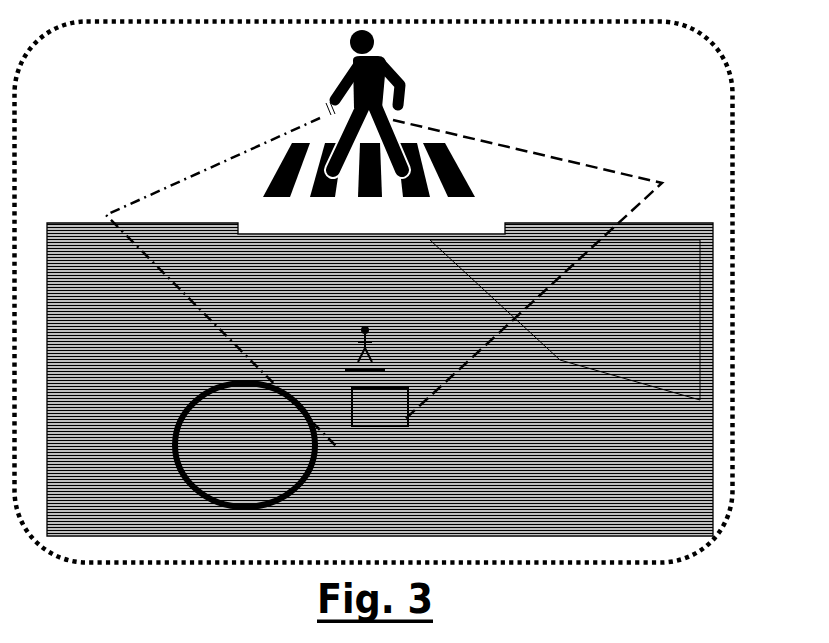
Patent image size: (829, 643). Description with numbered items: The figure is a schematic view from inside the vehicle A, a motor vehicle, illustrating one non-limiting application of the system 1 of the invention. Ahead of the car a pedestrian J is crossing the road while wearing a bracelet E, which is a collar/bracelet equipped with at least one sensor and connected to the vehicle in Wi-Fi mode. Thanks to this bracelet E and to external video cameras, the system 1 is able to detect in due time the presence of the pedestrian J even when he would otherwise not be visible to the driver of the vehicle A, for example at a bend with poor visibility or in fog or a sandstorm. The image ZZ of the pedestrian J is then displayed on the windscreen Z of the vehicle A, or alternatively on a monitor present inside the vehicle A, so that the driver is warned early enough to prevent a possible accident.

The system 1 is at (702, 554).
The vehicle A is at (74, 512).
The windscreen Z is at (548, 342).
The image of the pedestrian ZZ is at (394, 350).
The bracelet E is at (327, 113).
The pedestrian J is at (386, 87).